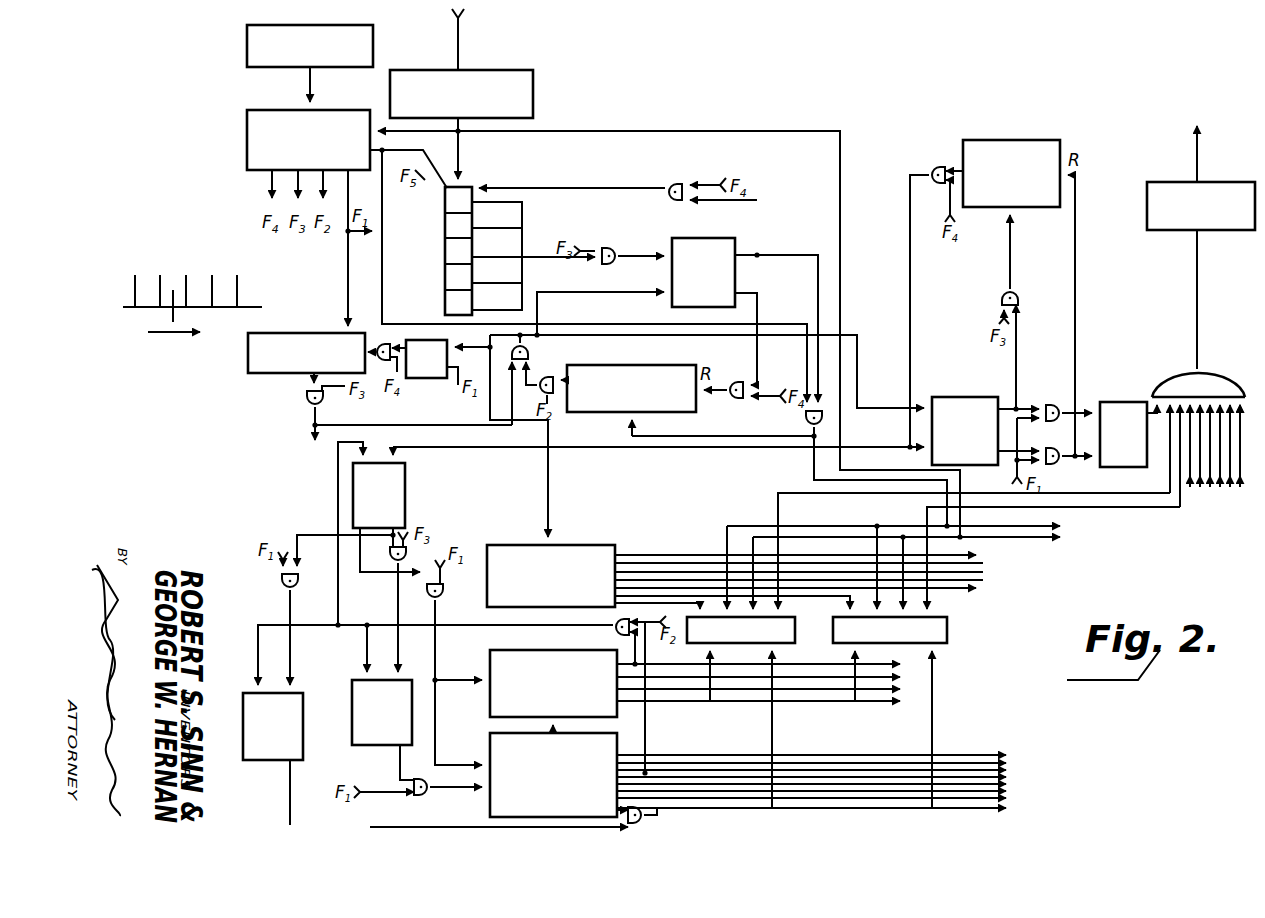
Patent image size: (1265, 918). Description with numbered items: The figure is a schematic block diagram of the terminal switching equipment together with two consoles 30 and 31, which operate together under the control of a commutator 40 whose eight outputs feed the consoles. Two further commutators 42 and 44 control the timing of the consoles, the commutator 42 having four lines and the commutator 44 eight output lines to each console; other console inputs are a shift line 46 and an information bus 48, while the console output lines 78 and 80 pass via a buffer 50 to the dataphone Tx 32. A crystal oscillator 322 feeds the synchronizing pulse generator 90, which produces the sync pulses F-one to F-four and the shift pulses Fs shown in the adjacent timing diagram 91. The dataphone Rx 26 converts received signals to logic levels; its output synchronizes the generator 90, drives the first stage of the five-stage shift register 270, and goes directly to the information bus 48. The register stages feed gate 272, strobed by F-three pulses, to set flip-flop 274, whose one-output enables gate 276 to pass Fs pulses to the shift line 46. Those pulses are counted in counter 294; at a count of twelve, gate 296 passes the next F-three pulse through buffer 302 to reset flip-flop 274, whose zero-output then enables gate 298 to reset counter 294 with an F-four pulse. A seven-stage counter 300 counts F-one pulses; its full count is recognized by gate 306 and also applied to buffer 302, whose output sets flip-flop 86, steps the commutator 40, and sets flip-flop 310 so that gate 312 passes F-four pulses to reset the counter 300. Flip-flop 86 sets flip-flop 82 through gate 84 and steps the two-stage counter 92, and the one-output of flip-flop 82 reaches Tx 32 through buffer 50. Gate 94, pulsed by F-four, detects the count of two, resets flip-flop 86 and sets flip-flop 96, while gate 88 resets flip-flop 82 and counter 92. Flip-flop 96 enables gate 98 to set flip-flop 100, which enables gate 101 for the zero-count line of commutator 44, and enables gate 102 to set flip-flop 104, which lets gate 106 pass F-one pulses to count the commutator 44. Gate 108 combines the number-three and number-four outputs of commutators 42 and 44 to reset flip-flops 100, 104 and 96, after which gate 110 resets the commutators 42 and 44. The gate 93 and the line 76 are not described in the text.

The crystal oscillator 322 is at (247, 34).
The dataphone receiver Rx 26 is at (533, 90).
The synchronizing pulse generator 90 is at (247, 118).
The 2-stage binary counter 92 is at (1030, 142).
The dataphone transmitter Tx 32 is at (1175, 230).
The timing diagram 91 is at (132, 310).
The 5-stage shift register 270 is at (445, 236).
The gate 272 is at (618, 248).
The flip-flop 274 is at (700, 240).
The gate 298 is at (686, 180).
The counter 294 is at (636, 366).
The gate 296 is at (552, 378).
The buffer 302 is at (530, 350).
The 7-stage binary counter 300 is at (242, 372).
The gate 306 is at (308, 396).
The gate 312 is at (380, 345).
The flip-flop 310 is at (430, 378).
The gate 276 is at (806, 422).
The flip-flop 86 is at (978, 396).
The gate 84 is at (1060, 402).
The gate 88 is at (1060, 466).
The flip-flop 82 is at (1138, 400).
The buffer 50 is at (1205, 378).
The AND gate 93 is at (1016, 292).
The gate 94 is at (934, 166).
The output line 78 is at (800, 493).
The output line 80 is at (1110, 507).
The shift line 46 is at (727, 545).
The information bus 48 is at (753, 537).
The commutator 40 is at (584, 545).
The line 76 is at (656, 592).
The console 30 is at (795, 640).
The console 31 is at (947, 640).
The commutator 42 is at (490, 654).
The commutator 44 is at (490, 746).
The gate 108 is at (612, 622).
The flip-flop 96 is at (404, 485).
The gate 98 is at (282, 583).
The flip-flop 100 is at (303, 752).
The gate 102 is at (406, 560).
The gate 110 is at (440, 600).
The flip-flop 104 is at (352, 690).
The gate 106 is at (420, 796).
The gate 101 is at (644, 820).